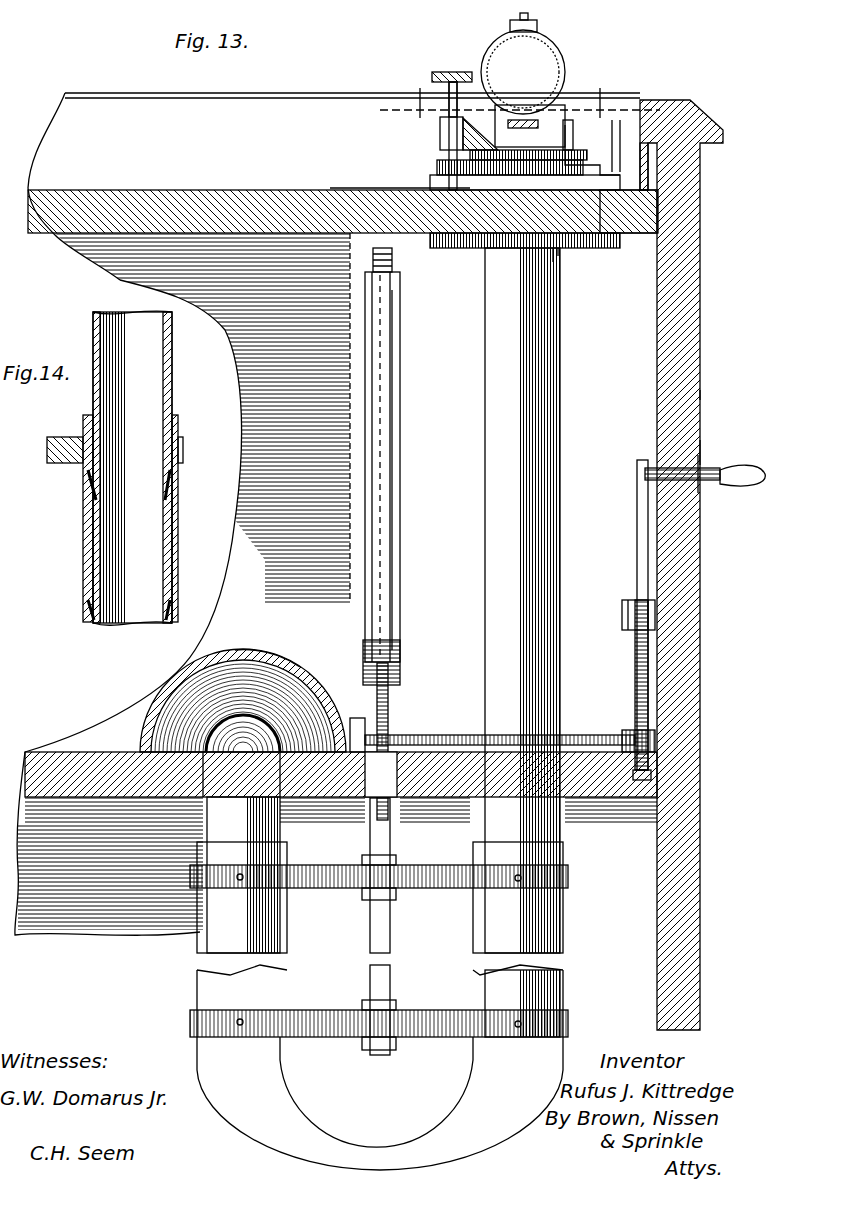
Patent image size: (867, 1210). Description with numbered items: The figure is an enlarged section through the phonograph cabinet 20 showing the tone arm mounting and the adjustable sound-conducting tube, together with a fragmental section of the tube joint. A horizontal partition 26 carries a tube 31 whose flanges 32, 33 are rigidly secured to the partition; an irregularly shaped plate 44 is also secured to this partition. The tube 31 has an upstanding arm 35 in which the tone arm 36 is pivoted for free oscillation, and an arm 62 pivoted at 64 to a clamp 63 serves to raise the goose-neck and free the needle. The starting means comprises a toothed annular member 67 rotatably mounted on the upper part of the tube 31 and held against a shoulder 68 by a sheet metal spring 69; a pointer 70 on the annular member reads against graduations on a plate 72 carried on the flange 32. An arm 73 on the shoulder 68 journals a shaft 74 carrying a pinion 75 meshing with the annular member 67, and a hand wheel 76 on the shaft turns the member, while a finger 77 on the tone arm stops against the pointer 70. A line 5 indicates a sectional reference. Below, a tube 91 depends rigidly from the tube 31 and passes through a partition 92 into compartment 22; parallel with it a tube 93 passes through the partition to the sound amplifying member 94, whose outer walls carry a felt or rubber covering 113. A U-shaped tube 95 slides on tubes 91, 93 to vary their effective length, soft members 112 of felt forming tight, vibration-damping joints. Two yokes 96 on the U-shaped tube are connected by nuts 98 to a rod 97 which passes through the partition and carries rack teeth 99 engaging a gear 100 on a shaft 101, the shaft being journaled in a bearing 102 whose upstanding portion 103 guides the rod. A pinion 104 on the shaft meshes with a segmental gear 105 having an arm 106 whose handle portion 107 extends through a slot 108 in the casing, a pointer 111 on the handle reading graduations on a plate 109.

In FIG. 13, the datum line 5 is at (520, 102).
In FIG. 13, the cabinet 20 is at (690, 668).
In FIG. 13, the compartment 22 is at (404, 455).
In FIG. 13, the horizontal partition 26 is at (120, 208).
In FIG. 13, the tube 31 is at (462, 135).
In FIG. 13, the flange 32 is at (640, 208).
In FIG. 13, the flange 33 is at (555, 248).
In FIG. 13, the upstanding arm 35 is at (537, 26).
In FIG. 13, the tone arm 36 is at (555, 55).
In FIG. 13, the irregularly shaped plate 44 is at (335, 188).
In FIG. 13, the arm 62 is at (530, 120).
In FIG. 13, the clamp 63 is at (560, 70).
In FIG. 13, the pivot 64 is at (498, 110).
In FIG. 13, the annular member 67 is at (470, 155).
In FIG. 13, the shoulder 68 is at (525, 223).
In FIG. 13, the sheet metal spring 69 is at (560, 252).
In FIG. 13, the pointer 70 is at (616, 146).
In FIG. 13, the plate 72 is at (648, 162).
In FIG. 13, the arm 73 is at (440, 127).
In FIG. 13, the shaft 74 is at (452, 108).
In FIG. 13, the pinion 75 is at (437, 170).
In FIG. 13, the hand wheel 76 is at (453, 72).
In FIG. 13, the finger 77 is at (591, 145).
In FIG. 13, the tube 91 is at (556, 388).
In FIG. 14, the tube 91 is at (100, 403).
In FIG. 13, the partition 92 is at (598, 805).
In FIG. 13, the tube 93 is at (265, 815).
In FIG. 13, the sound amplifying member 94 is at (288, 685).
In FIG. 13, the U-shaped tube 95 is at (285, 935).
In FIG. 14, the U-shaped tube 95 is at (178, 540).
In FIG. 13, the yokes 96 is at (435, 868).
In FIG. 14, the yokes 96 is at (65, 462).
In FIG. 13, the rod 97 is at (395, 838).
In FIG. 13, the nuts 98 is at (396, 858).
In FIG. 13, the rack teeth 99 is at (392, 700).
In FIG. 13, the gear 100 is at (398, 668).
In FIG. 13, the shaft 101 is at (428, 735).
In FIG. 13, the bearing 102 is at (355, 718).
In FIG. 13, the upstanding portion 103 is at (400, 597).
In FIG. 13, the pinion 104 is at (625, 735).
In FIG. 13, the segmental gear 105 is at (635, 672).
In FIG. 13, the arm 106 is at (637, 550).
In FIG. 13, the handle portion 107 is at (740, 470).
In FIG. 13, the slot 108 is at (680, 480).
In FIG. 13, the plate 109 is at (700, 398).
In FIG. 13, the pointer 111 is at (702, 448).
In FIG. 14, the soft members 112 is at (165, 480).
In FIG. 13, the covering 113 is at (262, 644).